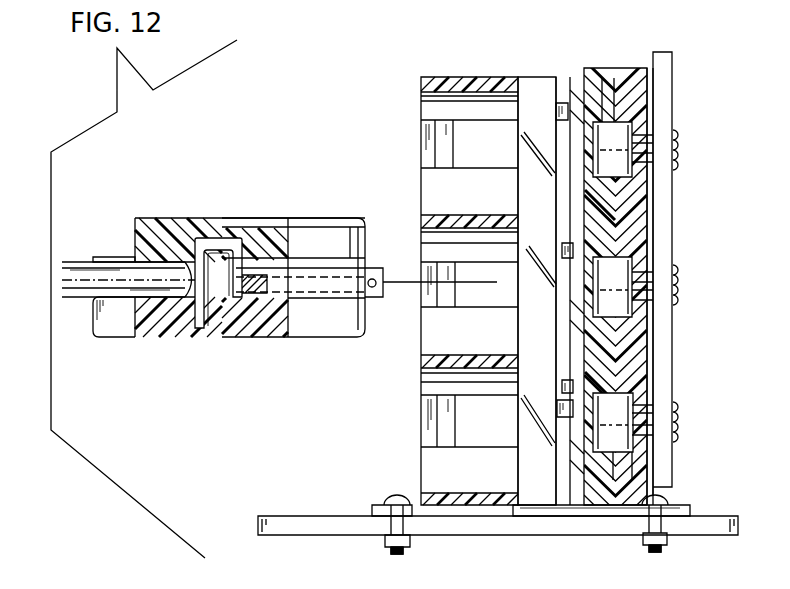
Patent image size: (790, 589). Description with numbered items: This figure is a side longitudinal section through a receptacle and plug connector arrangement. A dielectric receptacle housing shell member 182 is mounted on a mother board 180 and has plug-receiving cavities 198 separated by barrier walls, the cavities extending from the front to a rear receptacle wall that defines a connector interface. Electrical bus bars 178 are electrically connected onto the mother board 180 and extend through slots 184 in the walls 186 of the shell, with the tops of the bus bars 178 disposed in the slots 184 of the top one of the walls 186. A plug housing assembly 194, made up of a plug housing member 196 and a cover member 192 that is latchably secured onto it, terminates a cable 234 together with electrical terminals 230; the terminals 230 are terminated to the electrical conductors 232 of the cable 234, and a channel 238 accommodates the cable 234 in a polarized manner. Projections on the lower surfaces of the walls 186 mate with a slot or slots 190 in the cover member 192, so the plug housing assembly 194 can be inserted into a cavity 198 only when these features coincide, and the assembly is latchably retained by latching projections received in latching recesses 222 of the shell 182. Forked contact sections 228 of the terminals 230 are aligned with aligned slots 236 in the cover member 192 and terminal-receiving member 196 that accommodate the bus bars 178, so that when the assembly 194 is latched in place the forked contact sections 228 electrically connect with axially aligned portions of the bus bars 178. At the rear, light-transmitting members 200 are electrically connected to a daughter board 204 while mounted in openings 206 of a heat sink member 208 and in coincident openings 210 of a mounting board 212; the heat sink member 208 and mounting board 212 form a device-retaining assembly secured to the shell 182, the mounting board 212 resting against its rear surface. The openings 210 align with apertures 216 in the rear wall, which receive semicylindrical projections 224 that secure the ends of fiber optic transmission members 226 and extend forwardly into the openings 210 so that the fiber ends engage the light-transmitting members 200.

The electrical bus bar 178 is at (533, 88).
The mother board 180 is at (330, 523).
The dielectric receptacle housing shell member 182 is at (478, 72).
The slot 184 is at (547, 78).
The wall 186 is at (421, 84).
The slot 190 is at (305, 218).
The cover member 192 is at (203, 218).
The plug housing assembly 194 is at (157, 210).
The plug housing member 196 is at (190, 330).
The plug-receiving cavity 198 is at (430, 183).
The light-transmitting member 200 is at (622, 135).
The daughter board 204 is at (670, 243).
The opening 206 is at (618, 203).
The heat sink member 208 is at (648, 347).
The opening 210 is at (604, 103).
The mounting board 212 is at (603, 505).
The aperture 216 is at (577, 425).
The latching recess 222 is at (443, 138).
The semicylindrical projection 224 is at (373, 298).
The fiber optic transmission member 226 is at (333, 276).
The forked contact section 228 is at (310, 293).
The electrical terminal 230 is at (275, 310).
The electrical conductor 232 is at (255, 262).
The cable 234 is at (85, 270).
The slot 236 is at (352, 230).
The channel 238 is at (137, 300).